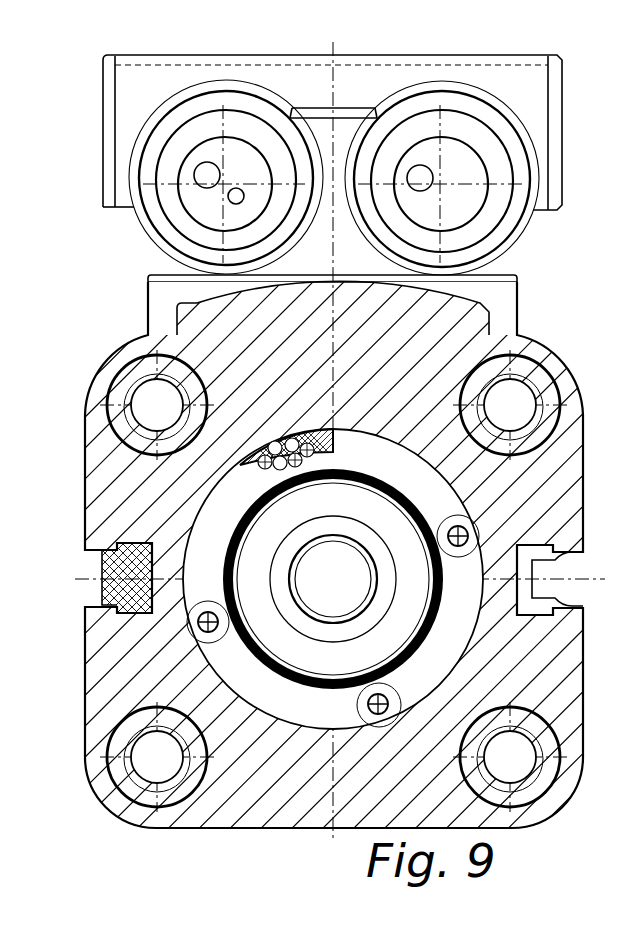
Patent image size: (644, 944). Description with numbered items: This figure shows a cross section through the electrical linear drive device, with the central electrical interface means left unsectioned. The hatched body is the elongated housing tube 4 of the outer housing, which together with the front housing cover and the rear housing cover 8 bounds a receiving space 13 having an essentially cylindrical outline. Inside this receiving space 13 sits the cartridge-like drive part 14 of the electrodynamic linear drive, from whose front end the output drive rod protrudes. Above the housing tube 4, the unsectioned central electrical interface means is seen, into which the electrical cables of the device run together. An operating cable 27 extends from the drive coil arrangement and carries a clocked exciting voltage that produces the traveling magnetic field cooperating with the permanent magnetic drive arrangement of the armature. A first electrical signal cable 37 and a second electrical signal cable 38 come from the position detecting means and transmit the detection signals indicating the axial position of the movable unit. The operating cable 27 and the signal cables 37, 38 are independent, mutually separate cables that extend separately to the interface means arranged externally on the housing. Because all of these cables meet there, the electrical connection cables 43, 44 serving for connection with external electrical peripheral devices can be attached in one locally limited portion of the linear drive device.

The housing tube 4 is at (538, 350).
The rear housing cover 8 is at (555, 670).
The receiving space 13 is at (422, 468).
The drive part 14 is at (478, 565).
The operating cable 27 is at (420, 177).
The first electrical signal cable 37 is at (194, 176).
The second electrical signal cable 38 is at (238, 187).
The electrical connection cable 43 is at (210, 147).
The electrical connection cable 44 is at (465, 169).